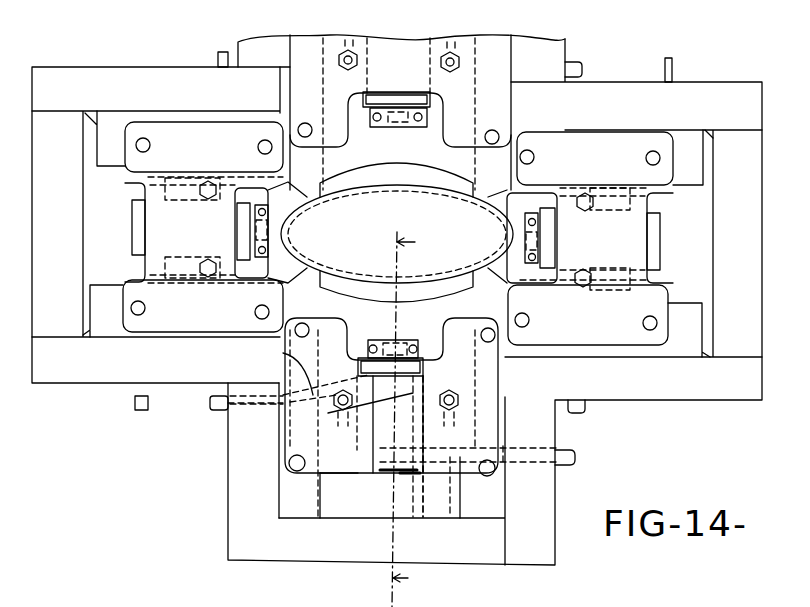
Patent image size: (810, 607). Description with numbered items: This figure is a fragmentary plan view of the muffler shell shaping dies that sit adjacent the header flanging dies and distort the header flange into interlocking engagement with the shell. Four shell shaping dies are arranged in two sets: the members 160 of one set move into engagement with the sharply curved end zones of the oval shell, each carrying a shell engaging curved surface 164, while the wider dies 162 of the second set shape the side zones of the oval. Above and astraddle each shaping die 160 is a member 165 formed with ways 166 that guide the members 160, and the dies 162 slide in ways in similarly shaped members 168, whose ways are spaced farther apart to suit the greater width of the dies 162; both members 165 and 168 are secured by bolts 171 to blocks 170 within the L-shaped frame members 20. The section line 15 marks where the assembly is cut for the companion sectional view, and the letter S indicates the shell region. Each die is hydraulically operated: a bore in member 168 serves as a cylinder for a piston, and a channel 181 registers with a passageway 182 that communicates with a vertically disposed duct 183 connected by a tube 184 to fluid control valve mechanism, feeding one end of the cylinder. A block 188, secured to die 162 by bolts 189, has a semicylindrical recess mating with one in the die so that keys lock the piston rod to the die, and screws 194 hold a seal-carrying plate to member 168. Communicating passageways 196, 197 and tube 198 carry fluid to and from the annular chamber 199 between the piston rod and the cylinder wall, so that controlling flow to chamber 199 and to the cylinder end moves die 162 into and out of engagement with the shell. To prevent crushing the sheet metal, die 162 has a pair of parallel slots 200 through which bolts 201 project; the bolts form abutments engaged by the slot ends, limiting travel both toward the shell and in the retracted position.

The L-shaped frame member 20 is at (135, 67).
The section line 15- 15 is at (410, 411).
The shell shaping member 160 is at (268, 193).
The shaping die 162 is at (424, 154).
The shell engaging curved surface 164 is at (294, 247).
The member 165 is at (162, 327).
The ways 166 is at (135, 191).
The member 168 is at (500, 60).
The block 170 is at (103, 118).
The bolt 171 is at (212, 142).
The channel 181 is at (393, 479).
The passageway 182 is at (424, 490).
The vertically disposed duct 183 is at (498, 442).
The tube 184 is at (672, 68).
The block 188 is at (385, 332).
The bolt 189 is at (425, 331).
The screw 194 is at (366, 338).
The passageway 196 is at (283, 355).
The passageway 197 is at (283, 373).
The tube 198 is at (223, 60).
The annular chamber 199 is at (367, 475).
The slot 200 is at (456, 412).
The bolt 201 is at (456, 404).
The spring S is at (358, 209).